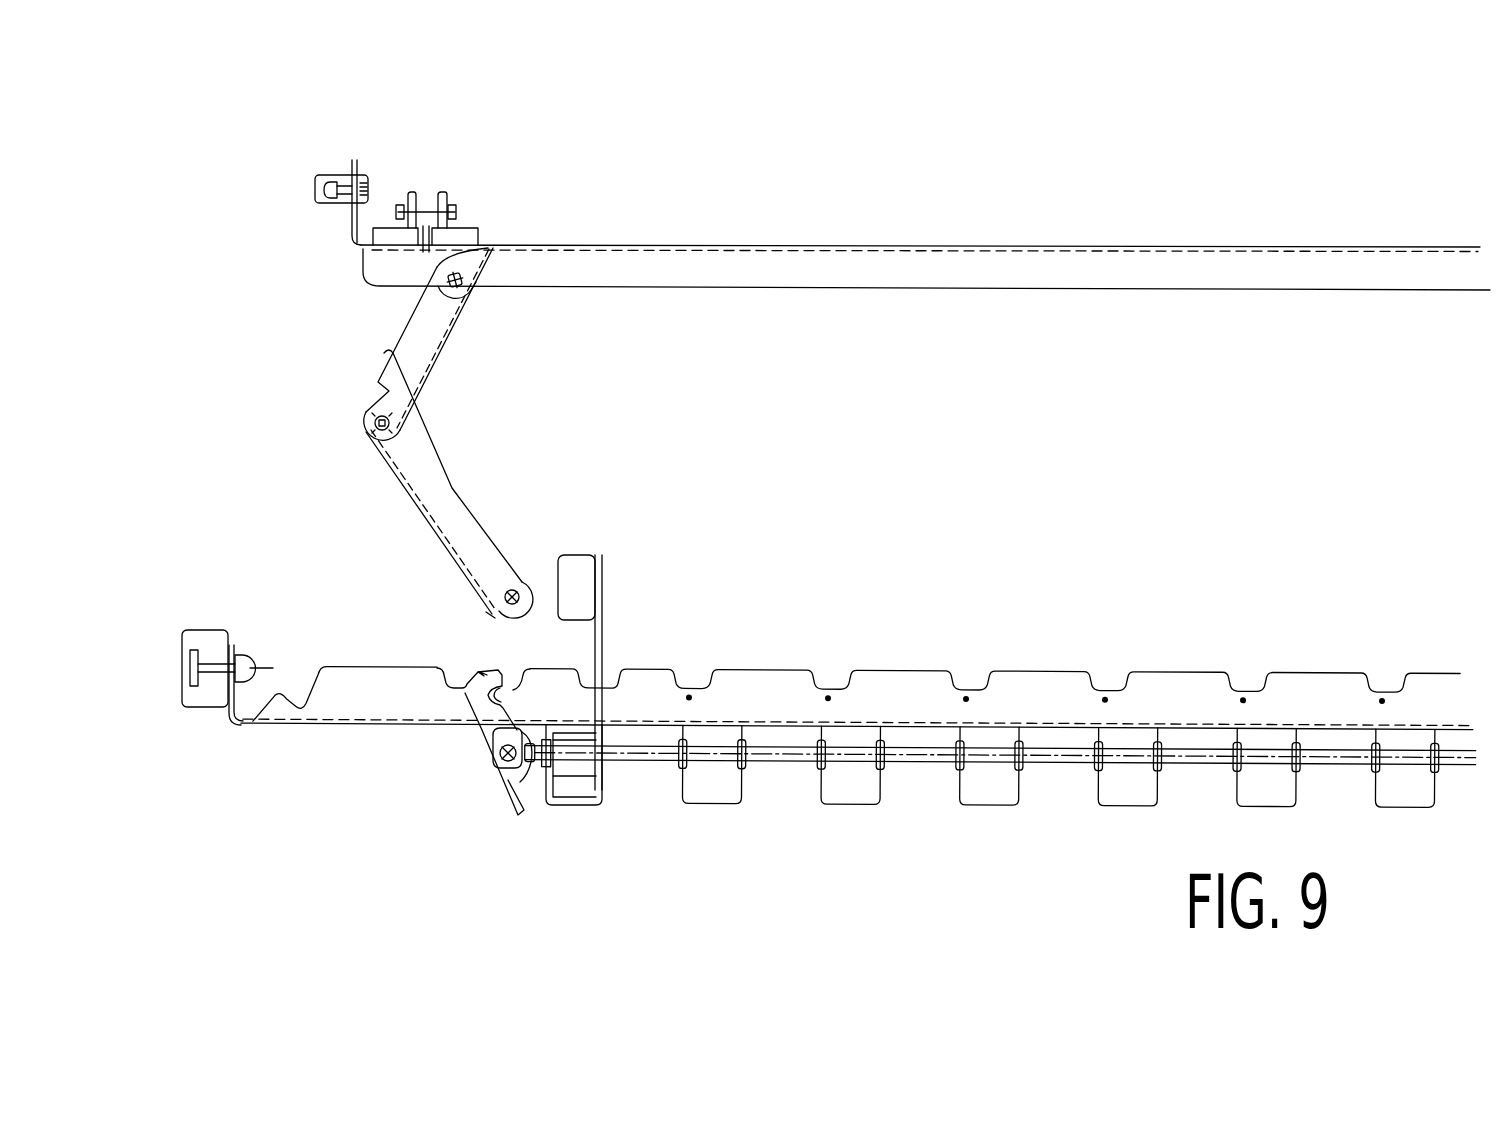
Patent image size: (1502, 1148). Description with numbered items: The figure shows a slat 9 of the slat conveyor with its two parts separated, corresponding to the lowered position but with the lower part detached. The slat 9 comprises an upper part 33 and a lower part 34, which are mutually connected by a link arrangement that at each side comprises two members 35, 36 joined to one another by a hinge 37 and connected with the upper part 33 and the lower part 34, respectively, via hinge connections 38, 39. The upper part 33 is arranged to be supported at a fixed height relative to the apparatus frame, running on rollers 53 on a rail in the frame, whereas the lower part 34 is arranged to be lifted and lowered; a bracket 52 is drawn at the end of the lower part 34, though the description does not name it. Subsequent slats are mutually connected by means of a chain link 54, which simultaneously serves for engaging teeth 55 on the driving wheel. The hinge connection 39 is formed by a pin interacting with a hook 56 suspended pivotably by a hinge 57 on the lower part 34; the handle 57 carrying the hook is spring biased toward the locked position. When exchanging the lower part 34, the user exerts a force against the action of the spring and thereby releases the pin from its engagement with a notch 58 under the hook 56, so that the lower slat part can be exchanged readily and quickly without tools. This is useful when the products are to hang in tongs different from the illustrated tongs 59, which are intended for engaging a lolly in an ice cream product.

The slat 9 is at (1007, 175).
The upper part 33 is at (690, 267).
The lower part 34 is at (875, 682).
The member 35 is at (437, 357).
The member 36 is at (465, 515).
The hinge 37 is at (362, 427).
The hinge connection 38 is at (475, 295).
The hinge connection 39 is at (542, 595).
The lower mounting bracket 52 is at (209, 705).
The roller 53 is at (333, 174).
The chain link 54 is at (427, 198).
The teeth 55 is at (511, 588).
The hook 56 is at (478, 672).
The hinge 57 is at (500, 772).
The notch 58 is at (507, 700).
The tong 59 is at (607, 622).